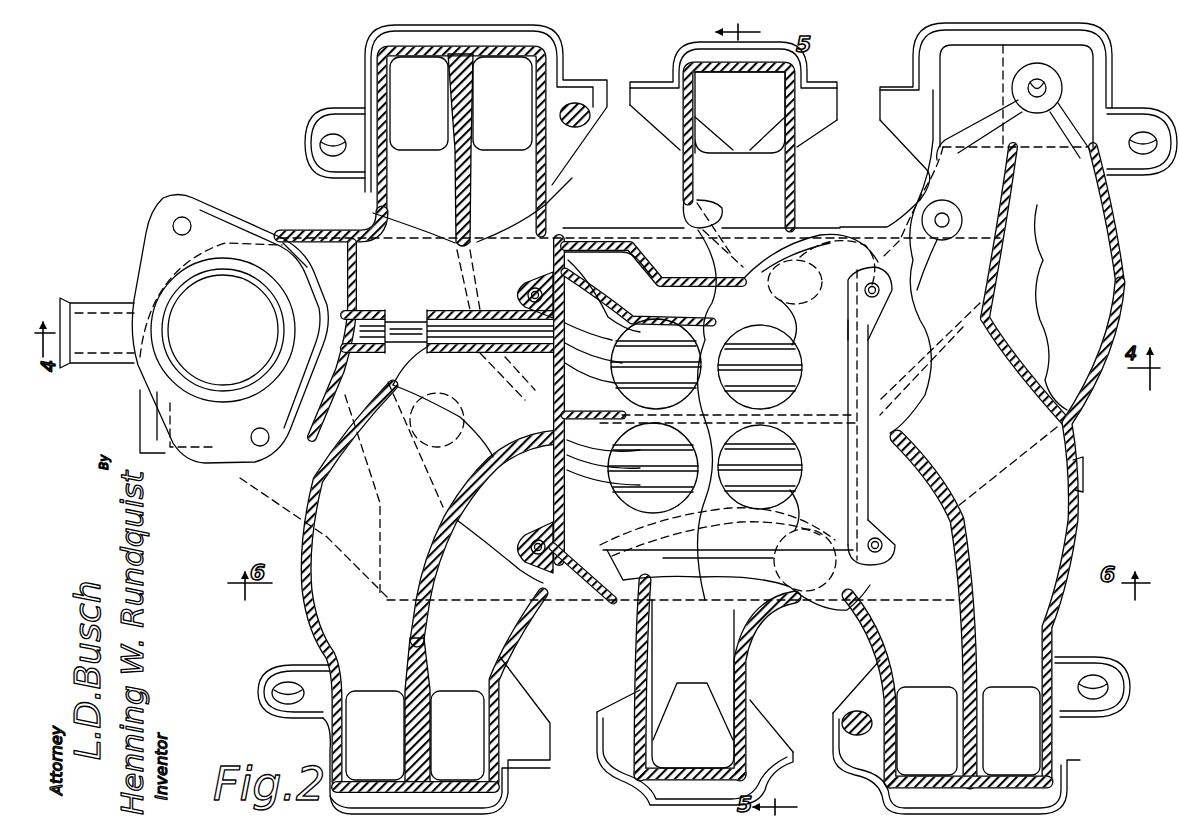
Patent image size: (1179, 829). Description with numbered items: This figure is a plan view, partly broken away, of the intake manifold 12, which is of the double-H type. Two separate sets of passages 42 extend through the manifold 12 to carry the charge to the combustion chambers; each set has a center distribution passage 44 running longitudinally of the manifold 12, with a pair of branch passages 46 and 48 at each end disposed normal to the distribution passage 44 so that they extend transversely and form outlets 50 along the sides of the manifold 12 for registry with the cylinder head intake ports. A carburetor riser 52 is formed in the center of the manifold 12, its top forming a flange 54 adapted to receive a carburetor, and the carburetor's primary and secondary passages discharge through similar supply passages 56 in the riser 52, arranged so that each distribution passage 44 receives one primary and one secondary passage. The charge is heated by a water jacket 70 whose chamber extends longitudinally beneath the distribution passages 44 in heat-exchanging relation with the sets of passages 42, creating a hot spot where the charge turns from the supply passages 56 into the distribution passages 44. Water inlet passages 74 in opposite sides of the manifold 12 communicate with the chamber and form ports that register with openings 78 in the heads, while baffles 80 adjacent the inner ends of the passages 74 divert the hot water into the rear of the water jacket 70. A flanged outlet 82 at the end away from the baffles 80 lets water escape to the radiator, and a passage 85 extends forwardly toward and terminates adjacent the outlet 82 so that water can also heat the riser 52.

The intake manifold 12 is at (1094, 407).
The sets of passages 42 is at (700, 335).
The distribution passage 44 is at (550, 411).
The branch passage 46 is at (330, 614).
The branch passage 48 is at (390, 190).
The outlet 50 is at (473, 143).
The carburetor riser 52 is at (833, 390).
The flange 54 is at (873, 500).
The supply passage 56 is at (795, 357).
The water jacket 70 is at (300, 233).
The water inlet passage 74 is at (772, 172).
The opening 78 is at (753, 140).
The baffle 80 is at (733, 257).
The outlet 82 is at (230, 382).
The passage 85 is at (467, 337).